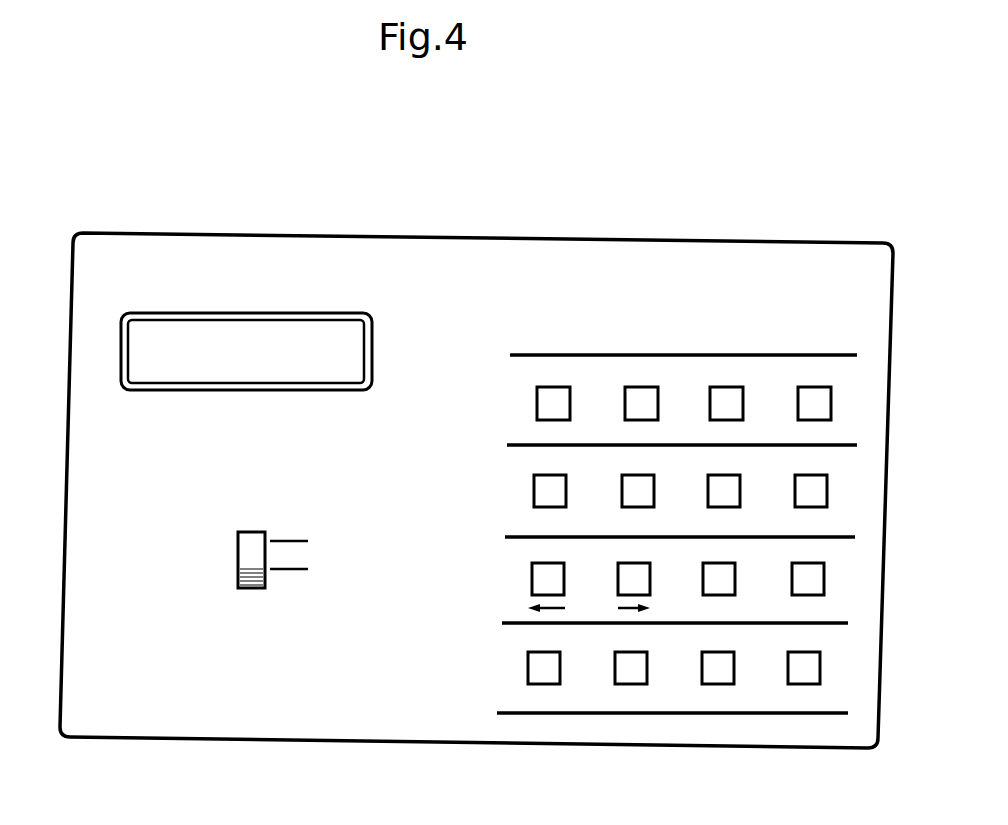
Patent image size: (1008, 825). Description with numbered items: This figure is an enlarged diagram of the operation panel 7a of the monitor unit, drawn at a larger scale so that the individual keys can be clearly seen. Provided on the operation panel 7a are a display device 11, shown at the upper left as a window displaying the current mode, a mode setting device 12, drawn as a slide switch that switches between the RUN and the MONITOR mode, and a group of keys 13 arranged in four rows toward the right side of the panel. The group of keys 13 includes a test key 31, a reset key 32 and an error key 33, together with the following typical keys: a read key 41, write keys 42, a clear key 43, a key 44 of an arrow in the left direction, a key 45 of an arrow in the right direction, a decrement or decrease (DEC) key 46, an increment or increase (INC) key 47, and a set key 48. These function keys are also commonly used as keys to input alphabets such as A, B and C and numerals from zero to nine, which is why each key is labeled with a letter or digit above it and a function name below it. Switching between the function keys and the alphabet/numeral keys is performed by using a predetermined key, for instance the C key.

The operation panel 7a is at (360, 717).
The display device 11 is at (232, 318).
The mode setting device 12 is at (238, 570).
The group of keys 13 is at (702, 514).
The read key 41 is at (655, 388).
The write keys 42 is at (798, 394).
The clear key 43 is at (534, 490).
The error key 33 is at (740, 490).
The test key 31 is at (827, 485).
The key of an arrow in the left direction 44 is at (532, 578).
The key of an arrow in the right direction 45 is at (618, 580).
The decrement key 46 is at (735, 580).
The increment key 47 is at (824, 583).
The reset key 32 is at (528, 668).
The set key 48 is at (820, 665).